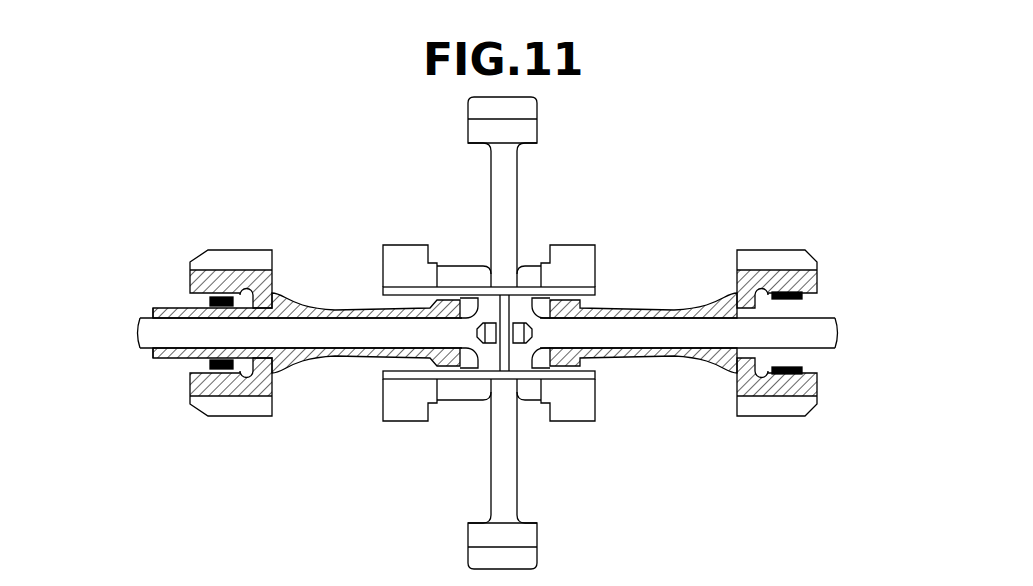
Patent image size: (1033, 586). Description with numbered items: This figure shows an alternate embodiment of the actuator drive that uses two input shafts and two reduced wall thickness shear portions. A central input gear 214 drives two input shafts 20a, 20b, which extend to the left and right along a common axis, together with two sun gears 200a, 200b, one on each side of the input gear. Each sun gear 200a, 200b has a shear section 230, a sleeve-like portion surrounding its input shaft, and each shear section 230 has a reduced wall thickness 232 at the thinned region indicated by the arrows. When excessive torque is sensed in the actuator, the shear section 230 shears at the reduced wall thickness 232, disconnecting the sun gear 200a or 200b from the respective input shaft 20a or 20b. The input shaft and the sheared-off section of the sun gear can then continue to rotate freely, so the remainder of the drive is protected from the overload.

The input gear 214 is at (517, 177).
The shear section 230 is at (318, 307).
The reduced wall thickness 232 is at (333, 416).
The sun gear 200a is at (240, 250).
The sun gear 200b is at (780, 250).
The input shaft 20a is at (152, 318).
The input shaft 20b is at (820, 318).